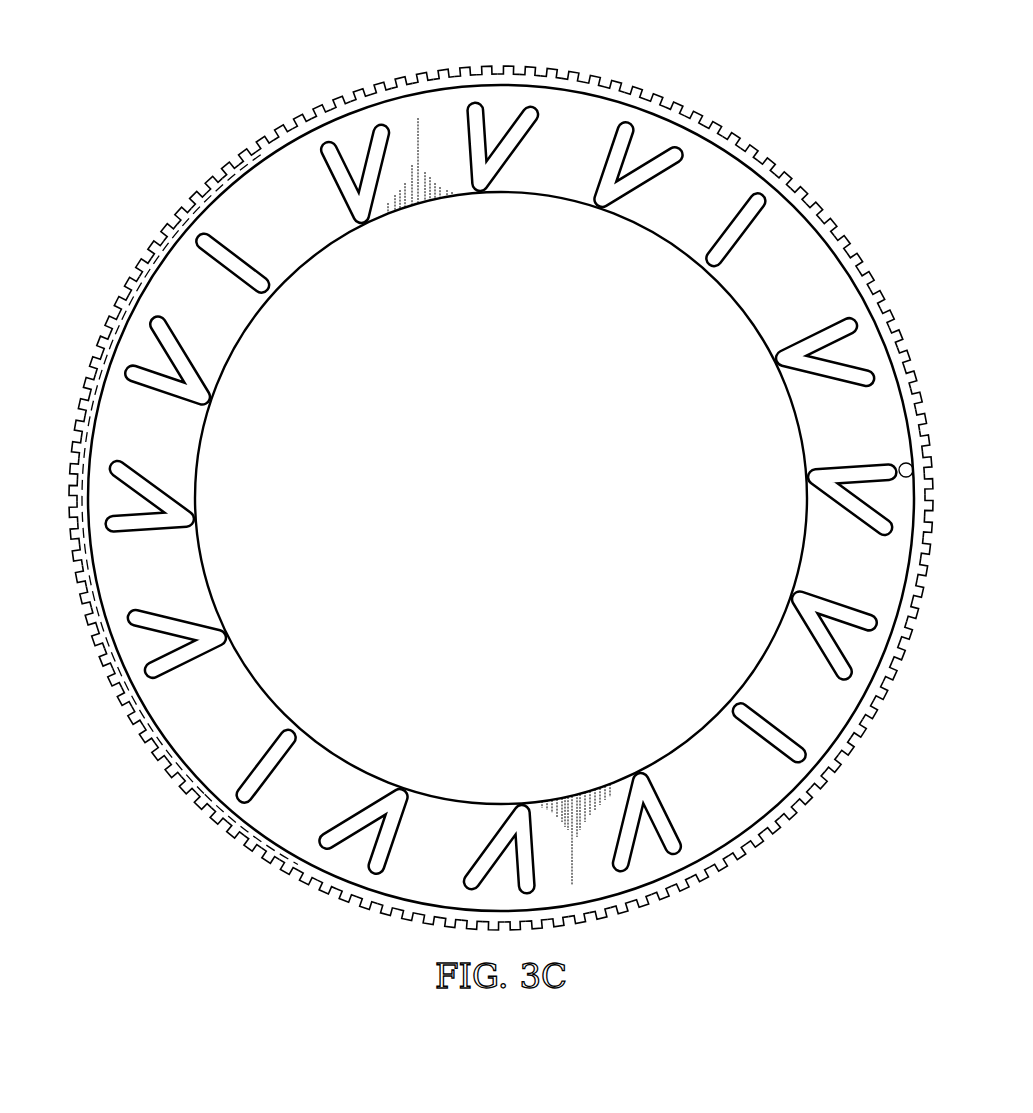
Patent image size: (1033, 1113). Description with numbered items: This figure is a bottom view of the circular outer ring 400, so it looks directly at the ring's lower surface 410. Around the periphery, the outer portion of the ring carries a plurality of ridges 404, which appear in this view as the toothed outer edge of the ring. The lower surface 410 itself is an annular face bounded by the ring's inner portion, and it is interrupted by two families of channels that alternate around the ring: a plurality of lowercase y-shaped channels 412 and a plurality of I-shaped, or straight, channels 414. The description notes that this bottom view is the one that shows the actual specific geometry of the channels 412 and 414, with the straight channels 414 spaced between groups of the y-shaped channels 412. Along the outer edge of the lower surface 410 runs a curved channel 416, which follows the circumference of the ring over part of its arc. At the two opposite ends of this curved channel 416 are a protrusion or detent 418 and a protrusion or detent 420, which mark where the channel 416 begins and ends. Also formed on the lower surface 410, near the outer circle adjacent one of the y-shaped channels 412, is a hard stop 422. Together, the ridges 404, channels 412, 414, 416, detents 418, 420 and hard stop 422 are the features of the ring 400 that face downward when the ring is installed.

The circular outer ring 400 is at (774, 68).
The ridges 404 is at (566, 72).
The lower surface 410 is at (318, 252).
The y-shaped channels 412 is at (612, 206).
The I-shaped channels 414 is at (716, 268).
The curved channel 416 is at (96, 352).
The protrusion or detent 418 is at (258, 152).
The protrusion or detent 420 is at (296, 872).
The hard stop 422 is at (904, 466).